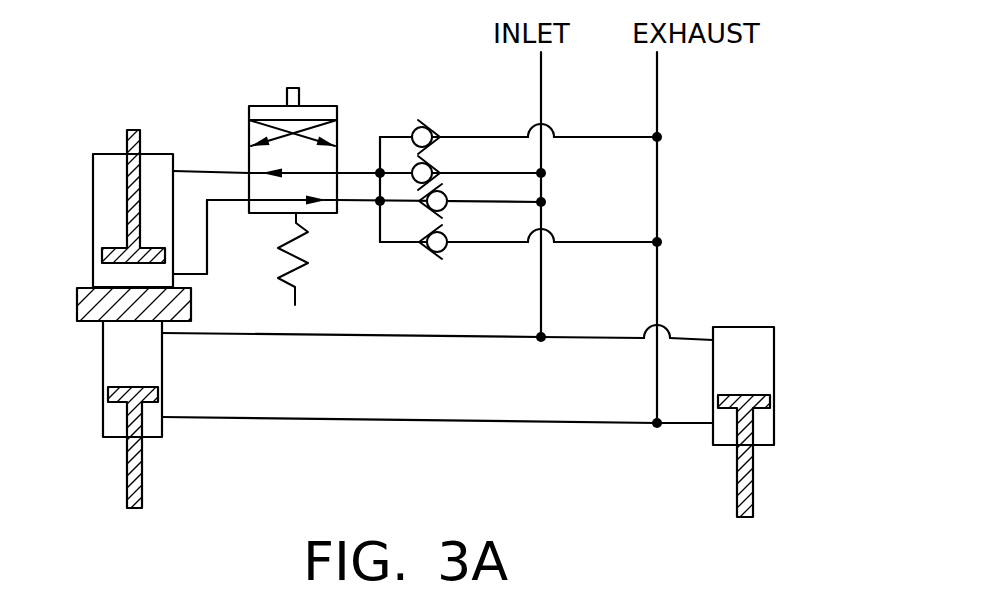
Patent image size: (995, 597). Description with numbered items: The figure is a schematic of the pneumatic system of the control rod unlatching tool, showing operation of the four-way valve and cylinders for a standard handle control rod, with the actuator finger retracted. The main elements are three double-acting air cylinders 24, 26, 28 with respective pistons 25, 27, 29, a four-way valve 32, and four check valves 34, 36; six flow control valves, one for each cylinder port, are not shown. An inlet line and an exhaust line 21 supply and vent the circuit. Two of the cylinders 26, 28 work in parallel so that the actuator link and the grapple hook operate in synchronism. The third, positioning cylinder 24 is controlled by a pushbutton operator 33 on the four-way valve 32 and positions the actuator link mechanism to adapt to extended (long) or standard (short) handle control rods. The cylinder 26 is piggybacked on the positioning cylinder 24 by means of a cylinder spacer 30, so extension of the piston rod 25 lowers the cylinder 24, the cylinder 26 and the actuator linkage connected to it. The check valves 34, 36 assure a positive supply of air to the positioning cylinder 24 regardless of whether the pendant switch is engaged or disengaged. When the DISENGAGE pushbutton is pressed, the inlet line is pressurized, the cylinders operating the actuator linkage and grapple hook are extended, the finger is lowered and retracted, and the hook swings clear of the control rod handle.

The exhaust line 21 is at (657, 188).
The positioning cylinder 24 is at (93, 173).
The piston rod 25 is at (127, 138).
The air cylinder 26 is at (103, 348).
The piston 27 is at (127, 485).
The air cylinder 28 is at (774, 357).
The piston 29 is at (753, 492).
The cylinder spacer 30 is at (77, 312).
The four-way valve 32 is at (249, 132).
The pushbutton operator 33 is at (300, 92).
The check valves 34 is at (447, 168).
The check valves 36 is at (420, 205).